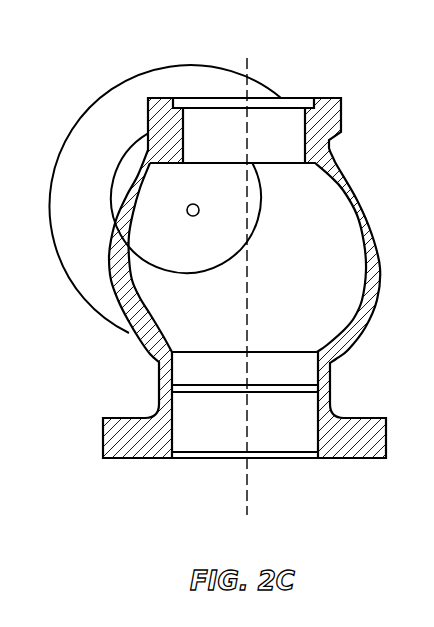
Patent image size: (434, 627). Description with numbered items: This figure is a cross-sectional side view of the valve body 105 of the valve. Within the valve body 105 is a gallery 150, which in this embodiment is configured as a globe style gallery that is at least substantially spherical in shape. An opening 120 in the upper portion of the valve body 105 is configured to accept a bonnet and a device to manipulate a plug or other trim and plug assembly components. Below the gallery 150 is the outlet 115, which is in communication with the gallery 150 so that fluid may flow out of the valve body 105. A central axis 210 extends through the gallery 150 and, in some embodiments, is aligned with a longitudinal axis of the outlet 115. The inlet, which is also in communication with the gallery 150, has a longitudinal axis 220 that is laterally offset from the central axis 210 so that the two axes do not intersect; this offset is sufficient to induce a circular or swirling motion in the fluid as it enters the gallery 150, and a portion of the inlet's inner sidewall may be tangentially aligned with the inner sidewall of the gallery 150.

The valve body 105 is at (143, 359).
The outlet 115 is at (227, 411).
The opening 120 is at (182, 120).
The gallery 150 is at (320, 283).
The central axis 210 is at (247, 62).
The longitudinal axis 220 is at (188, 204).